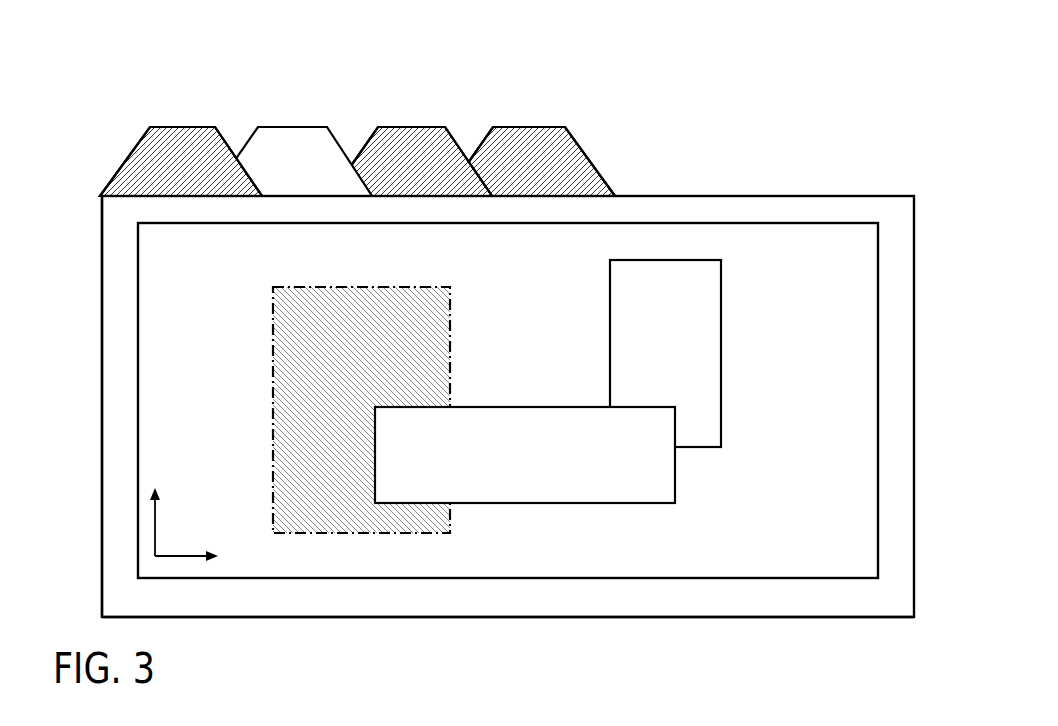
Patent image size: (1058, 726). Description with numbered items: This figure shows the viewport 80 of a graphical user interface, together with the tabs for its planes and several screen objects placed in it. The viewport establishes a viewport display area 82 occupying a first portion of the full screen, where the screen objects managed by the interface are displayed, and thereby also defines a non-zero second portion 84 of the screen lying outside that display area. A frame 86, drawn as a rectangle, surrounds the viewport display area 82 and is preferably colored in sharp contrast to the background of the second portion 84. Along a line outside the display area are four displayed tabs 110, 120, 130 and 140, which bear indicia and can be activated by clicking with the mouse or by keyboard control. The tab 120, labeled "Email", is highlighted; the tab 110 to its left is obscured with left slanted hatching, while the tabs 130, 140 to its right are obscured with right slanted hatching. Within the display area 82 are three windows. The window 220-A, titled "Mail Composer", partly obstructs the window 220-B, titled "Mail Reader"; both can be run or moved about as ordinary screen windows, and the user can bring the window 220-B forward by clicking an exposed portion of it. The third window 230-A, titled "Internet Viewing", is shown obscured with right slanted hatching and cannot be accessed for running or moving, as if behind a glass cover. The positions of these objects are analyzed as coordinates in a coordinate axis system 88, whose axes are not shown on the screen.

The viewport 80 is at (927, 198).
The viewport display area 82 is at (508, 400).
The second portion 84 is at (486, 490).
The frame 86 is at (117, 288).
The coordinate axis system 88 is at (141, 537).
The tab 110 is at (181, 114).
The tab 120 is at (290, 114).
The tab 130 is at (410, 114).
The tab 140 is at (528, 114).
The window 220-A is at (523, 394).
The window 220-B is at (736, 277).
The window 230-A is at (257, 335).